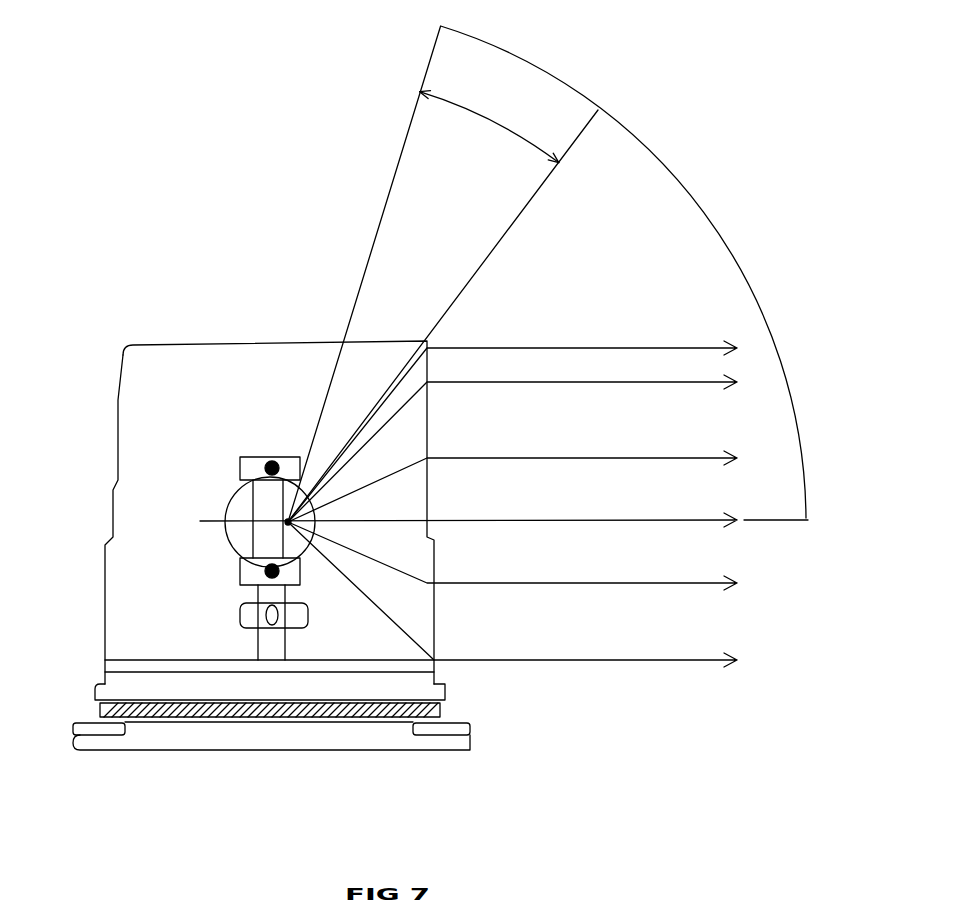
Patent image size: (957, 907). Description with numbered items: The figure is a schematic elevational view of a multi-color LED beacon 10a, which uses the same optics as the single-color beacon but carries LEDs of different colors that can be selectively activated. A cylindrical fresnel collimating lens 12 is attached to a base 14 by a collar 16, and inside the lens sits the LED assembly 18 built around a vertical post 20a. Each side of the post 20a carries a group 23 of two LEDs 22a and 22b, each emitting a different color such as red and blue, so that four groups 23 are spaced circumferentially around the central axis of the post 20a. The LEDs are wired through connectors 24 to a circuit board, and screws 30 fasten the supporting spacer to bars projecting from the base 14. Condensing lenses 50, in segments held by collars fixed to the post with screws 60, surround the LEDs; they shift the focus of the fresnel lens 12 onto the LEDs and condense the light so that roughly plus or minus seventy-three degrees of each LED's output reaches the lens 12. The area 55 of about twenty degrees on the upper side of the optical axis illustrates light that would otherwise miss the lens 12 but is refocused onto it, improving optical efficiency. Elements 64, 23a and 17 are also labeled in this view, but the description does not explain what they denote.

The multi-color LED beacon 10a is at (269, 496).
The cylindrical fresnel collimating lens 12 is at (288, 522).
The screws 60 is at (288, 522).
The LED assembly 18 is at (288, 522).
The pivot 64 is at (250, 485).
The LED 22b is at (240, 466).
The group of LEDs 23 is at (230, 500).
The LED 22a is at (242, 550).
The pivot pin 23a is at (225, 521).
The axis 17 is at (238, 530).
The condensing lenses 50 is at (230, 517).
The connectors 24 is at (243, 610).
The post 20a is at (265, 645).
The collar 16 is at (445, 687).
The base 14 is at (76, 745).
The screws 30 is at (288, 522).
The area 55 is at (547, 274).